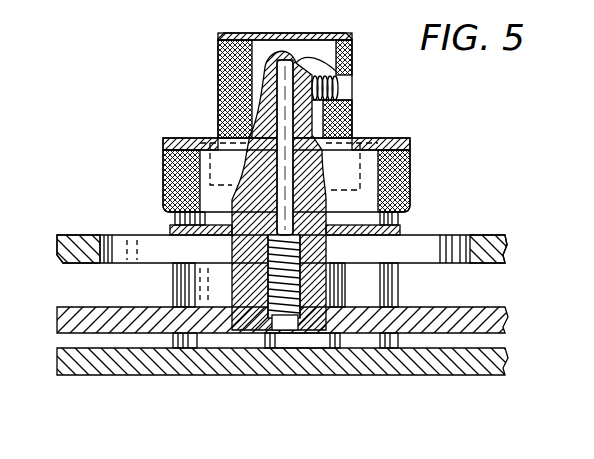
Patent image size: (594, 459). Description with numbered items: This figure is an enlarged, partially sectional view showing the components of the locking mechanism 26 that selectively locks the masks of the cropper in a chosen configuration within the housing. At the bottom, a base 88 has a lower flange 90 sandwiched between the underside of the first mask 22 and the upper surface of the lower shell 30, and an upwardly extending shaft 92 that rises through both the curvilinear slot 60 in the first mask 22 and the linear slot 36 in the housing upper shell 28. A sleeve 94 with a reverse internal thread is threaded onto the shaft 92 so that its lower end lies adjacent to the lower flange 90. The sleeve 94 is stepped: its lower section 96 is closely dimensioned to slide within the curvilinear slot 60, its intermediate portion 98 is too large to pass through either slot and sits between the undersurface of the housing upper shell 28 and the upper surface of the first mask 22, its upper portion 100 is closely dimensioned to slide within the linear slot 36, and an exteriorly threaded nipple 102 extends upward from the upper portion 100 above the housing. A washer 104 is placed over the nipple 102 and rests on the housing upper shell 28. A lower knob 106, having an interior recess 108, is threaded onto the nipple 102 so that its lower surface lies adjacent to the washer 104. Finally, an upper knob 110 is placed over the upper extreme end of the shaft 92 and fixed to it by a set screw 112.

The locking mechanism 26 is at (162, 84).
The upper knob 110 is at (352, 63).
The set screw 112 is at (352, 88).
The interior recess 108 is at (375, 136).
The lower knob 106 is at (410, 160).
The shaft 92 is at (212, 172).
The exteriorly threaded nipple 102 is at (217, 208).
The upper portion 100 is at (245, 250).
The washer 104 is at (400, 232).
The linear slot 36 is at (447, 235).
The housing upper shell 28 is at (503, 243).
The first mask 22 is at (500, 310).
The lower shell 30 is at (505, 363).
The sleeve 94 is at (165, 273).
The intermediate portion 98 is at (192, 289).
The lower section 96 is at (233, 330).
The base 88 is at (262, 345).
The lower flange 90 is at (303, 347).
The curvilinear slot 60 is at (347, 347).